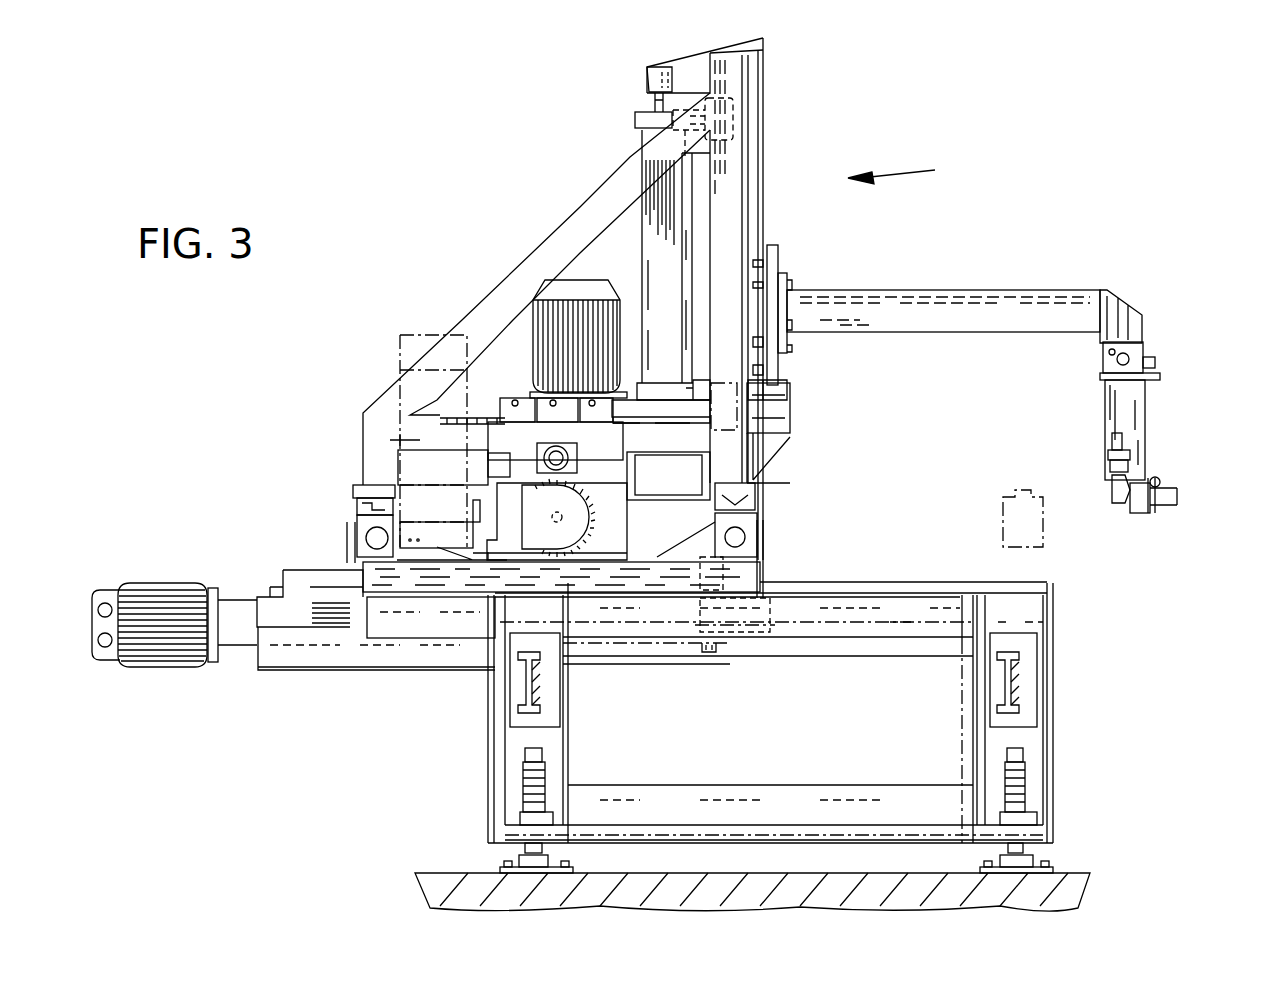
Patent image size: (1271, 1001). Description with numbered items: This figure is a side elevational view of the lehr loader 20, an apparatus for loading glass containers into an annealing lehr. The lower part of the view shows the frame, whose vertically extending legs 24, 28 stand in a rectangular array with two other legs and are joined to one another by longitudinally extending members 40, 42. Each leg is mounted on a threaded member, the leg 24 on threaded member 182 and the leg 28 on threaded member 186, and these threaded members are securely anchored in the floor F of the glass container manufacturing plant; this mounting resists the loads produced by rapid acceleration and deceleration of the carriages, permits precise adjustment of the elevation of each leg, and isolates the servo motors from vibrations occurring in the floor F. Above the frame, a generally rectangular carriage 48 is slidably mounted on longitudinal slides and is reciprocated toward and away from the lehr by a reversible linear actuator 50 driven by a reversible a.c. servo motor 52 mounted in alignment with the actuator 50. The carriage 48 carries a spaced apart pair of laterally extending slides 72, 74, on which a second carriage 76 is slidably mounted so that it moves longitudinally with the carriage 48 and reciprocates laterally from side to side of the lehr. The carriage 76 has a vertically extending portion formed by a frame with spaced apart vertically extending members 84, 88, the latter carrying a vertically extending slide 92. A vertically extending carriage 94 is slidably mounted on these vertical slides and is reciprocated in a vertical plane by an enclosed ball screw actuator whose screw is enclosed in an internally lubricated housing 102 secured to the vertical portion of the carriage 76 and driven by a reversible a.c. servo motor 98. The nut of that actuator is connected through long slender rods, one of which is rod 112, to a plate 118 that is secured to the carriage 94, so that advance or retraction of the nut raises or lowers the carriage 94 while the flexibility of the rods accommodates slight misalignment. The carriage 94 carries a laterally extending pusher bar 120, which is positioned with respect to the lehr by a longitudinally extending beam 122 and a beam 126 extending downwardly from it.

The lehr loader 20 is at (910, 164).
The leg 24 is at (1030, 742).
The leg 28 is at (505, 722).
The longitudinally extending member 40 is at (843, 637).
The longitudinally extending member 42 is at (803, 792).
The carriage 48 is at (750, 545).
The reversible linear actuator 50 is at (302, 608).
The reversible a.c. servo motor 52 is at (148, 587).
The laterally extending slide 72 is at (375, 505).
The laterally extending slide 74 is at (740, 507).
The carriage 76 is at (385, 440).
The vertically extending member 84 is at (740, 145).
The vertically extending member 88 is at (735, 240).
The vertically extending slide 92 is at (763, 178).
The vertically extending carriage 94 is at (765, 45).
The reversible a.c. servo motor 98 is at (533, 370).
The housing 102 is at (655, 292).
The rod 112 is at (655, 95).
The plate 118 is at (647, 72).
The pusher bar 120 is at (1160, 488).
The longitudinally extending beam 122 is at (898, 310).
The beam 126 is at (1133, 397).
The threaded member 182 is at (1025, 778).
The threaded member 186 is at (522, 785).
The floor F is at (1065, 875).